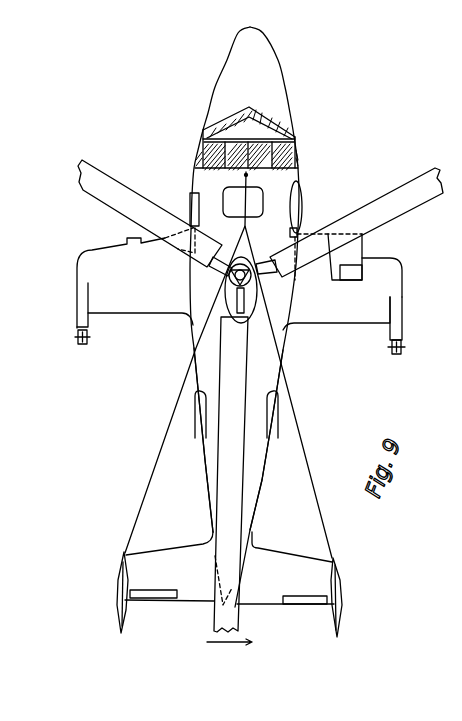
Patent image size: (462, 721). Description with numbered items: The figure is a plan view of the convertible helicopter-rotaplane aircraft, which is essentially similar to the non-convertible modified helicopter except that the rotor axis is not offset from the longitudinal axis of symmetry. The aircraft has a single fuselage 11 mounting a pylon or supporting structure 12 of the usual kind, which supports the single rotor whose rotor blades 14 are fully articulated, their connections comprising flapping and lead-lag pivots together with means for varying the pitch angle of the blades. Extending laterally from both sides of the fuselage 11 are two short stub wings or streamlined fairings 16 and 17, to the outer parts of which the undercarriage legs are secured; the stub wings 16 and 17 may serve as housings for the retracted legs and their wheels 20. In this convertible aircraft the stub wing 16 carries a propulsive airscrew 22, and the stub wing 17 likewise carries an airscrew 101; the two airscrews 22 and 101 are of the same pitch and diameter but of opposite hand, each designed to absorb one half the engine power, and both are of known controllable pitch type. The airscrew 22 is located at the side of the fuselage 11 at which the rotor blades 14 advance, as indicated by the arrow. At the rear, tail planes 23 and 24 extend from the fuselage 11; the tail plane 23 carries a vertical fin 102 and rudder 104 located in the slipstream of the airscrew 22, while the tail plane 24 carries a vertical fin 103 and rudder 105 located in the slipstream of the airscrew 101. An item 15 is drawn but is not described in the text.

The wheels 20 is at (293, 336).
The fuselage 11 is at (205, 448).
The pylon 12 is at (246, 258).
The rotor blades 14 is at (123, 187).
The blade housing 15 is at (358, 250).
The stub wing 16 is at (392, 275).
The stub wing 17 is at (101, 258).
The propulsive airscrew 22 is at (399, 350).
The tail plane 23 is at (262, 585).
The tail plane 24 is at (192, 580).
The airscrew 101 is at (76, 341).
The vertical fin 102 is at (342, 566).
The vertical fin 103 is at (121, 575).
The rudder 104 is at (342, 615).
The rudder 105 is at (117, 612).